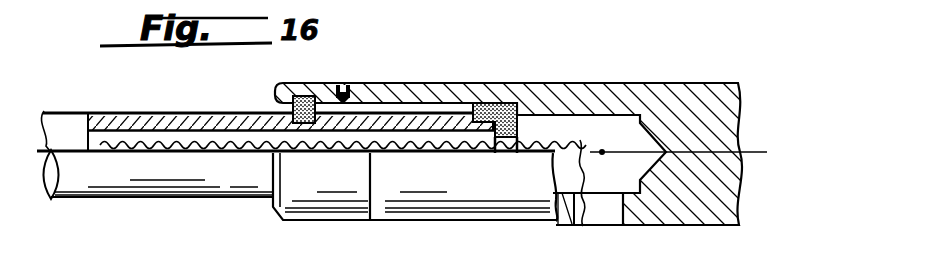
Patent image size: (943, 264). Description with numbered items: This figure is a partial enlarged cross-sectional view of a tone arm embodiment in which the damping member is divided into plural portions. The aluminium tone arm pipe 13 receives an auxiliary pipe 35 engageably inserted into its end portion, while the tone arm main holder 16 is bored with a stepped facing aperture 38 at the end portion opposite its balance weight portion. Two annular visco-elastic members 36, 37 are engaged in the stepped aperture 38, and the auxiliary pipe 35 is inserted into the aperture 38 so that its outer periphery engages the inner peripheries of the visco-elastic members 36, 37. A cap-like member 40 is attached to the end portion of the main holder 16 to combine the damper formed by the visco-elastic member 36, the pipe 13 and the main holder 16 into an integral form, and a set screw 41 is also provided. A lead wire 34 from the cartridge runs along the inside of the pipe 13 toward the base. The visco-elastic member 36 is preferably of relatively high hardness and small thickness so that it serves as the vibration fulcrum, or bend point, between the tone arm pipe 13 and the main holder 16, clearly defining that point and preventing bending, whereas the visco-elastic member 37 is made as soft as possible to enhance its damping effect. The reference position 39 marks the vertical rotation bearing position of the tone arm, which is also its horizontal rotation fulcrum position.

The pipe portion 13 is at (203, 182).
The tone arm main holder 16 is at (451, 87).
The lead wire 34 is at (460, 153).
The auxiliary pipe 35 is at (210, 112).
The visco-elastic member 36 is at (313, 94).
The visco-elastic member 37 is at (510, 102).
The stepped facing aperture 38 is at (627, 128).
The vertical rotation bearing position 39 is at (602, 155).
The cap-like member 40 is at (310, 197).
The set screw 41 is at (345, 84).